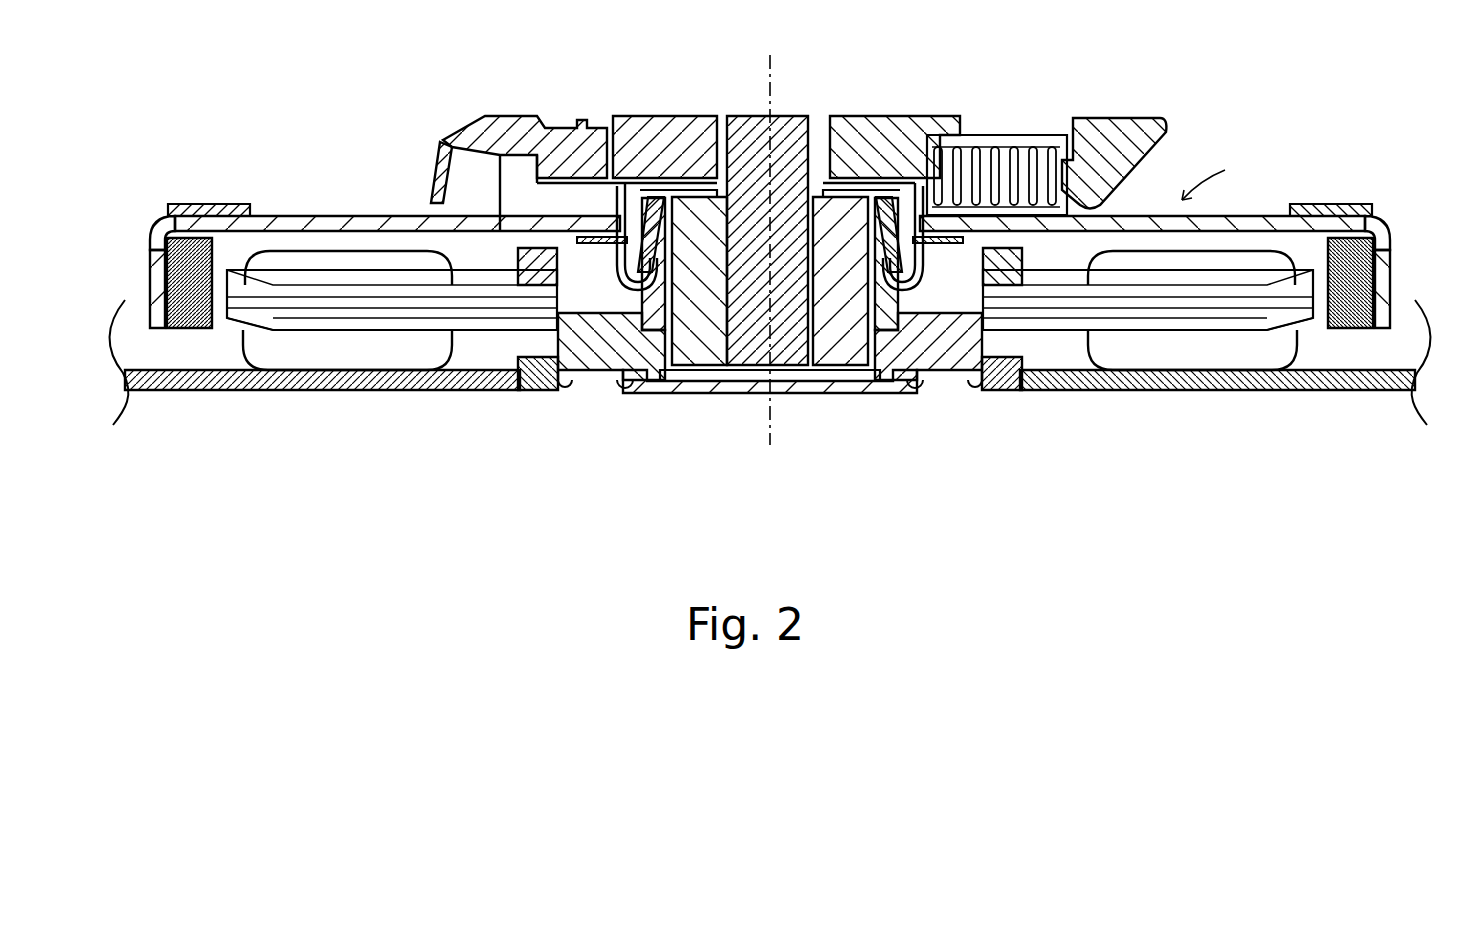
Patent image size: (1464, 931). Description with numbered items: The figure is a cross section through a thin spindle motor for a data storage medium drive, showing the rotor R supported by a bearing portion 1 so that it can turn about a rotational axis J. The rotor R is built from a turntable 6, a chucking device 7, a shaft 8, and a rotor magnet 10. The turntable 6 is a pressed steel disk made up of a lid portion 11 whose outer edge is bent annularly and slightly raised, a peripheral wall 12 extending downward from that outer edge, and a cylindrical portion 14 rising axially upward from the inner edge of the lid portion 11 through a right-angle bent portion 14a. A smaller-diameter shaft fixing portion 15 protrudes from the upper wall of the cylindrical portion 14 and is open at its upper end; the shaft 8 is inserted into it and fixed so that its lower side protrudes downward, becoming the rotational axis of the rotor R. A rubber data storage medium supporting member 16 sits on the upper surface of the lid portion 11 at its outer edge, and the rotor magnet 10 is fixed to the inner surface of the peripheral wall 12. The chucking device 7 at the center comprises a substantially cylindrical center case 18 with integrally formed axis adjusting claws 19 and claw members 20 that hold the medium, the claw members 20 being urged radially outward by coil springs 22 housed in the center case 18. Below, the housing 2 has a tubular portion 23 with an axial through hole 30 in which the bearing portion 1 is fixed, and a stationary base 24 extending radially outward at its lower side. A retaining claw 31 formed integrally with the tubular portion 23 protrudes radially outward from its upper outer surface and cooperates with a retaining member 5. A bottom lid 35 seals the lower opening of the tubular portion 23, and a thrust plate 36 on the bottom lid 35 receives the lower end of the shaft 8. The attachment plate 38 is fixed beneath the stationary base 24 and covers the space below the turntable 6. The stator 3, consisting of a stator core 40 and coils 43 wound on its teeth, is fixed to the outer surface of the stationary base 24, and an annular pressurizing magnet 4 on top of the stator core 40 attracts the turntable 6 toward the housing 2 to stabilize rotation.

The bearing portion 1 is at (682, 352).
The housing 2 is at (600, 382).
The stator 3 is at (770, 368).
The pressurizing magnet 4 is at (517, 266).
The retaining member 5 is at (618, 258).
The turntable 6 is at (158, 220).
The chucking device 7 is at (771, 206).
The shaft 8 is at (745, 115).
The rotor magnet 10 is at (192, 262).
The lid portion 11 is at (333, 215).
The peripheral wall 12 is at (150, 290).
The cylindrical portion 14 is at (616, 200).
The bent portion 14a is at (624, 213).
The shaft fixing portion 15 is at (814, 118).
The data storage medium supporting member 16 is at (198, 205).
The center case 18 is at (511, 115).
The axis adjusting claw 19 is at (432, 177).
The claw member 20 is at (1118, 117).
The coil spring 22 is at (1004, 143).
The tubular portion 23 is at (640, 332).
The stationary base 24 is at (571, 393).
The through hole 30 is at (677, 200).
The retaining claw 31 is at (648, 212).
The bottom lid 35 is at (817, 395).
The thrust plate 36 is at (735, 385).
The attachment plate 38 is at (216, 391).
The stator core 40 is at (403, 316).
The coil 43 is at (415, 430).
The rotational axis J is at (769, 242).
The rotor R is at (1211, 174).